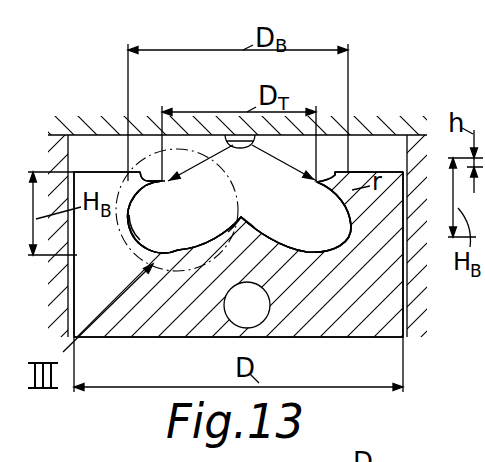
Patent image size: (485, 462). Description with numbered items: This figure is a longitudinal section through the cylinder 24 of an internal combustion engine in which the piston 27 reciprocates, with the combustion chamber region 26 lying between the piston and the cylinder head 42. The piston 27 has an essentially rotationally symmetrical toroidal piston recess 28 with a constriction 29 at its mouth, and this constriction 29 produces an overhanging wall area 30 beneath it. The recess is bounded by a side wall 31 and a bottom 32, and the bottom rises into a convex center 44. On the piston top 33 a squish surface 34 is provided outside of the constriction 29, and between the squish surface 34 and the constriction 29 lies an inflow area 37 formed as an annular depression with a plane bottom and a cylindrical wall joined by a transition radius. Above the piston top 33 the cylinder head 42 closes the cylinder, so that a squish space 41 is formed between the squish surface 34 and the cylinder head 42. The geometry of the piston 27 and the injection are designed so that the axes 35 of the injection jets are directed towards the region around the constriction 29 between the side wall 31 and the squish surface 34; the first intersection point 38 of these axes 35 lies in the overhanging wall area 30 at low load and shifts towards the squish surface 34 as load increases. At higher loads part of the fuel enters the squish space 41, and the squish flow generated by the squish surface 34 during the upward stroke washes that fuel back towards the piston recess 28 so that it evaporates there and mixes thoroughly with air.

The cylinder 24 is at (410, 306).
The combustion chamber recess 26 is at (268, 200).
The piston 27 is at (295, 320).
The piston recess 28 is at (307, 248).
The constriction 29 is at (352, 187).
The overhanging wall area 30 is at (144, 201).
The side wall 31 is at (128, 232).
The bottom of the recess 32 is at (178, 248).
The piston top 33 is at (354, 167).
The squish surface 34 is at (92, 170).
The axes of the injection jets 35 is at (190, 169).
The inflow area 37 is at (152, 180).
The first intersection point 38 is at (165, 182).
The squish space 41 is at (115, 150).
The cylinder head 42 is at (388, 123).
The convex center of the recess 44 is at (240, 225).